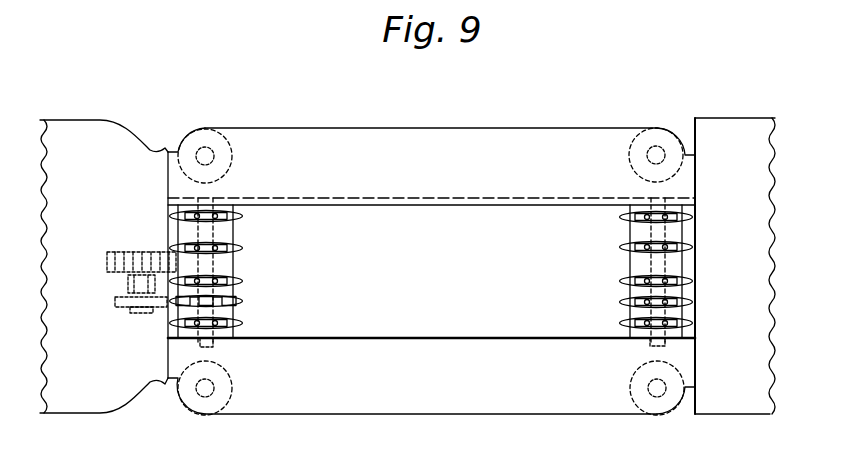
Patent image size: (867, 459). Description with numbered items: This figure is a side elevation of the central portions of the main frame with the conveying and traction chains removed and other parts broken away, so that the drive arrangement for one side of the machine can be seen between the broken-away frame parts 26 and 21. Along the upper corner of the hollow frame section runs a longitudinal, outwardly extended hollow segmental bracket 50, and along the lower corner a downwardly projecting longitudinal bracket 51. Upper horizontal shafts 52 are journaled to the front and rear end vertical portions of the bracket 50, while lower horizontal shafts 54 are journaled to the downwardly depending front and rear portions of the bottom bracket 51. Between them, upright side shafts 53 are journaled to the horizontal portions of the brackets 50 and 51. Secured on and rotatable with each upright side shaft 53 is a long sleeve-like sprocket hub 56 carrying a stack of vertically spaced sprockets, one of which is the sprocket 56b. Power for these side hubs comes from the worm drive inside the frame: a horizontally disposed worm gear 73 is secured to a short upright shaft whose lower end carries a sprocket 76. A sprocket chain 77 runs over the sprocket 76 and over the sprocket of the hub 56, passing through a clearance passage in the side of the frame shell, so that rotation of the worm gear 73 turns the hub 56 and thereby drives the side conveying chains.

The frame member 21 is at (740, 128).
The frame member 26 is at (63, 135).
The hollow segmental bracket 50 is at (437, 197).
The longitudinal bracket 51 is at (479, 341).
The upper horizontal shaft 52 is at (205, 150).
The upright side shaft 53 is at (209, 345).
The lower horizontal shaft 54 is at (214, 388).
The sprocket hub 56 is at (223, 235).
The sprocket 56b is at (241, 301).
The worm gear 73 is at (115, 256).
The sprocket 76 is at (118, 308).
The sprocket chain 77 is at (239, 294).